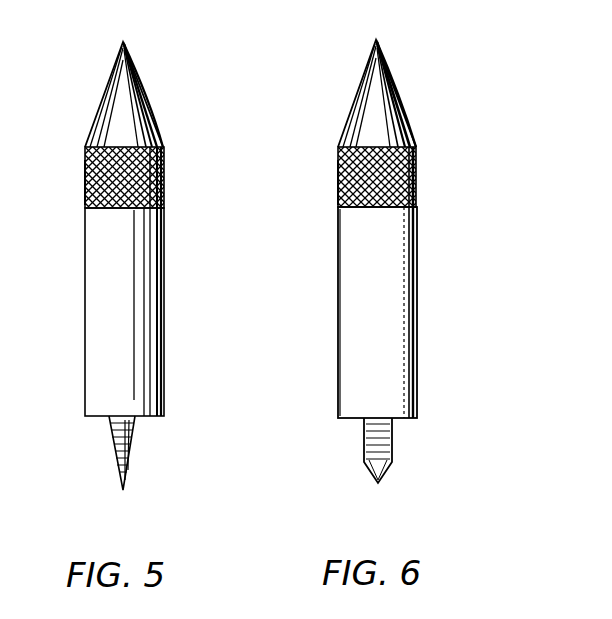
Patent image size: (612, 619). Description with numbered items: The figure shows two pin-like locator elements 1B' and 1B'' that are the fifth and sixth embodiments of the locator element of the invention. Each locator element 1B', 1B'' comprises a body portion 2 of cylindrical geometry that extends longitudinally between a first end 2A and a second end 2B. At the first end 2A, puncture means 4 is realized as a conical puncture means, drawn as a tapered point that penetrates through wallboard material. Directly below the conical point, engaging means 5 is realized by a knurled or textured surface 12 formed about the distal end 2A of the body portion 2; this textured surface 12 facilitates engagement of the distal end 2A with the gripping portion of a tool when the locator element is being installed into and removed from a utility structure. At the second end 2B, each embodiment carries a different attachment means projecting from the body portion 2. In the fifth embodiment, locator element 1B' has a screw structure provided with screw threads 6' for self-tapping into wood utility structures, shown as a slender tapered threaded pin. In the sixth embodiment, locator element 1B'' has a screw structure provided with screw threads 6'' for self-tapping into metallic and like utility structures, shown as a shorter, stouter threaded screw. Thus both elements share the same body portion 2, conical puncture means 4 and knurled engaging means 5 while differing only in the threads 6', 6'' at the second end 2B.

In FIG. 5, the locator element 1B' is at (42, 66).
In FIG. 6, the locator element 1B'' is at (501, 26).
In FIG. 5, the body portion 2 is at (178, 308).
In FIG. 6, the body portion 2 is at (430, 283).
In FIG. 5, the first end 2A is at (196, 133).
In FIG. 6, the first end 2A is at (440, 91).
In FIG. 5, the second end 2B is at (186, 395).
In FIG. 6, the second end 2B is at (438, 413).
In FIG. 5, the puncture means 4 is at (123, 43).
In FIG. 6, the puncture means 4 is at (376, 41).
In FIG. 5, the engaging means 5 is at (92, 183).
In FIG. 6, the engaging means 5 is at (338, 183).
In FIG. 5, the screw threads 6' is at (154, 453).
In FIG. 6, the screw threads 6'' is at (413, 450).
In FIG. 5, the knurled or textured surface 12 is at (150, 182).
In FIG. 6, the knurled or textured surface 12 is at (412, 165).